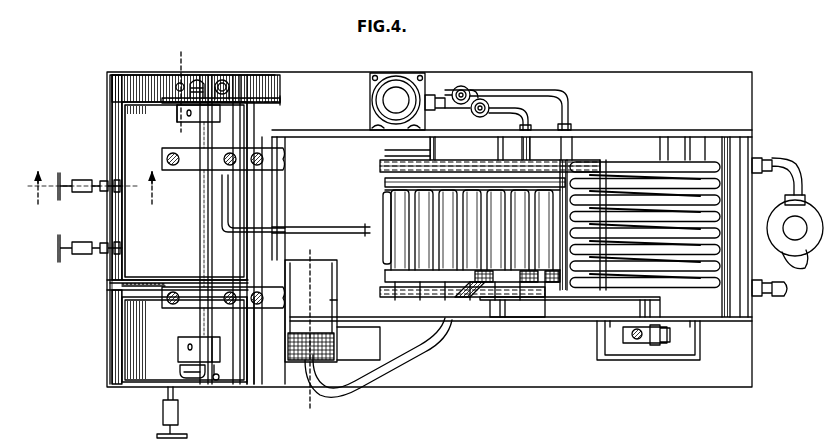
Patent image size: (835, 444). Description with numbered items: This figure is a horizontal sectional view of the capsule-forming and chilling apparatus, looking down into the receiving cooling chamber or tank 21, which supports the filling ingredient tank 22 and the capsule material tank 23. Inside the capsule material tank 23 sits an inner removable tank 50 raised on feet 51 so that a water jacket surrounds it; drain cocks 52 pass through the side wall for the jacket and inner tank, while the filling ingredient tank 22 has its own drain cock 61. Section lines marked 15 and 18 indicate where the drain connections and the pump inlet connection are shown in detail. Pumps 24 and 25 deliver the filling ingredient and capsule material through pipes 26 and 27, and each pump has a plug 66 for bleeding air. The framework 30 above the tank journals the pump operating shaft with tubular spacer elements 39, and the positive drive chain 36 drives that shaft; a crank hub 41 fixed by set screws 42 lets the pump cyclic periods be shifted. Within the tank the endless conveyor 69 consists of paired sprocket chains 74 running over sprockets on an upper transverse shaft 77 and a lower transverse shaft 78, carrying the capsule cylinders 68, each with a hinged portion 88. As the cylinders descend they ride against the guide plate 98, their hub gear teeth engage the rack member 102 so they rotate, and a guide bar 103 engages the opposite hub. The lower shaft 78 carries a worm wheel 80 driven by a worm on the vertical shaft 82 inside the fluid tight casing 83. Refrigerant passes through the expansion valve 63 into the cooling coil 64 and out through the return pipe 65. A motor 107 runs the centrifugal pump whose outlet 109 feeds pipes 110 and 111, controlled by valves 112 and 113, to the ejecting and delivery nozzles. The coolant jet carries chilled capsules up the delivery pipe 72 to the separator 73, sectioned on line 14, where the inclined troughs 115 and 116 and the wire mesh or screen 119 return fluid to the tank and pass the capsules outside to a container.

The section line 14- 14 is at (295, 248).
The section line 15- 15 is at (95, 176).
The section line 18- 18 is at (200, 50).
The receiving cooling chamber or tank 21 is at (605, 136).
The filling ingredient tank 22 is at (107, 366).
The capsule material tank 23 is at (108, 96).
The pump 24 is at (208, 378).
The pump 25 is at (214, 80).
The pipe 26 is at (222, 262).
The pipe 27 is at (287, 198).
The framework 30 is at (185, 303).
The positive drive chain 36 is at (277, 98).
The tubular spacer elements 39 is at (215, 136).
The crank hub 41 is at (222, 350).
The set screws 42 is at (178, 112).
The inner removable tank 50 is at (120, 153).
The feet 51 is at (120, 112).
The drain cocks 52 is at (80, 240).
The drain cock 61 is at (180, 412).
The expansion valve 63 is at (808, 213).
The cooling coil 64 is at (678, 150).
The return pipe 65 is at (768, 300).
The plugs 66 is at (183, 84).
The cylinders 68 is at (420, 250).
The endless conveyor 69 is at (575, 148).
The delivery pipe 72 is at (436, 349).
The separator 73 is at (283, 340).
The sprocket chains 74 is at (380, 164).
The upper transverse shaft 77 is at (420, 152).
The lower transverse shaft 78 is at (653, 147).
The worm wheel 80 is at (650, 334).
The vertical shaft 82 is at (637, 341).
The fluid tight casing 83 is at (675, 360).
The hinged portion 88 is at (383, 216).
The guide plate 98 is at (572, 268).
The rack member 102 is at (405, 181).
The guide bar 103 is at (525, 298).
The motor 107 is at (396, 94).
The outlet 109 is at (438, 96).
The pipe 110 is at (538, 92).
The pipe 111 is at (483, 99).
The valve 112 is at (466, 87).
The valve 113 is at (510, 104).
The inclined trough 115 is at (288, 232).
The inclined trough 116 is at (370, 344).
The wire mesh or screen 119 is at (312, 357).